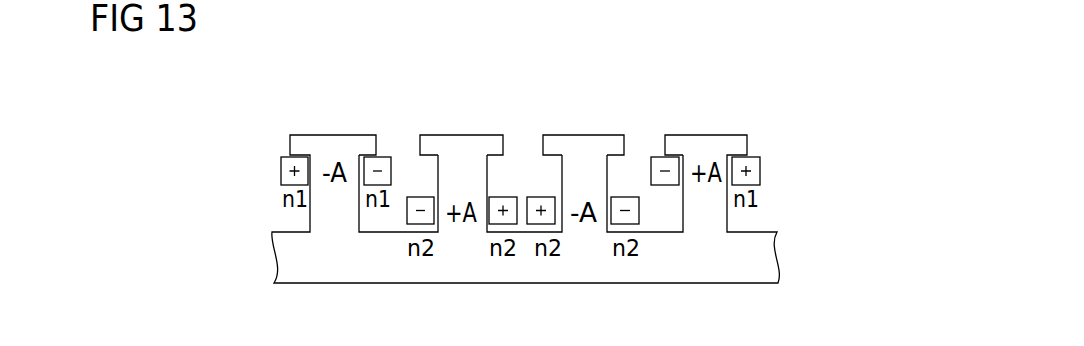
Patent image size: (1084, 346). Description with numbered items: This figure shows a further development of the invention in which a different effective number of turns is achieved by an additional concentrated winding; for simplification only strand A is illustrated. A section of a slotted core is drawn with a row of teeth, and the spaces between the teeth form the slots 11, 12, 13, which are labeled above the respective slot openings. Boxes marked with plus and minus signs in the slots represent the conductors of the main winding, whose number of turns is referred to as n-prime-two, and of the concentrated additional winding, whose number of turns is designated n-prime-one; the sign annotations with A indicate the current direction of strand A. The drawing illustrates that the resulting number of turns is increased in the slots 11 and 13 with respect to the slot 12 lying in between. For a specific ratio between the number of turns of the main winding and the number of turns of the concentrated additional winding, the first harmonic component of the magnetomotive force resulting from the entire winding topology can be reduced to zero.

The slot 11 is at (398, 168).
The slot 12 is at (524, 168).
The slot 13 is at (645, 168).